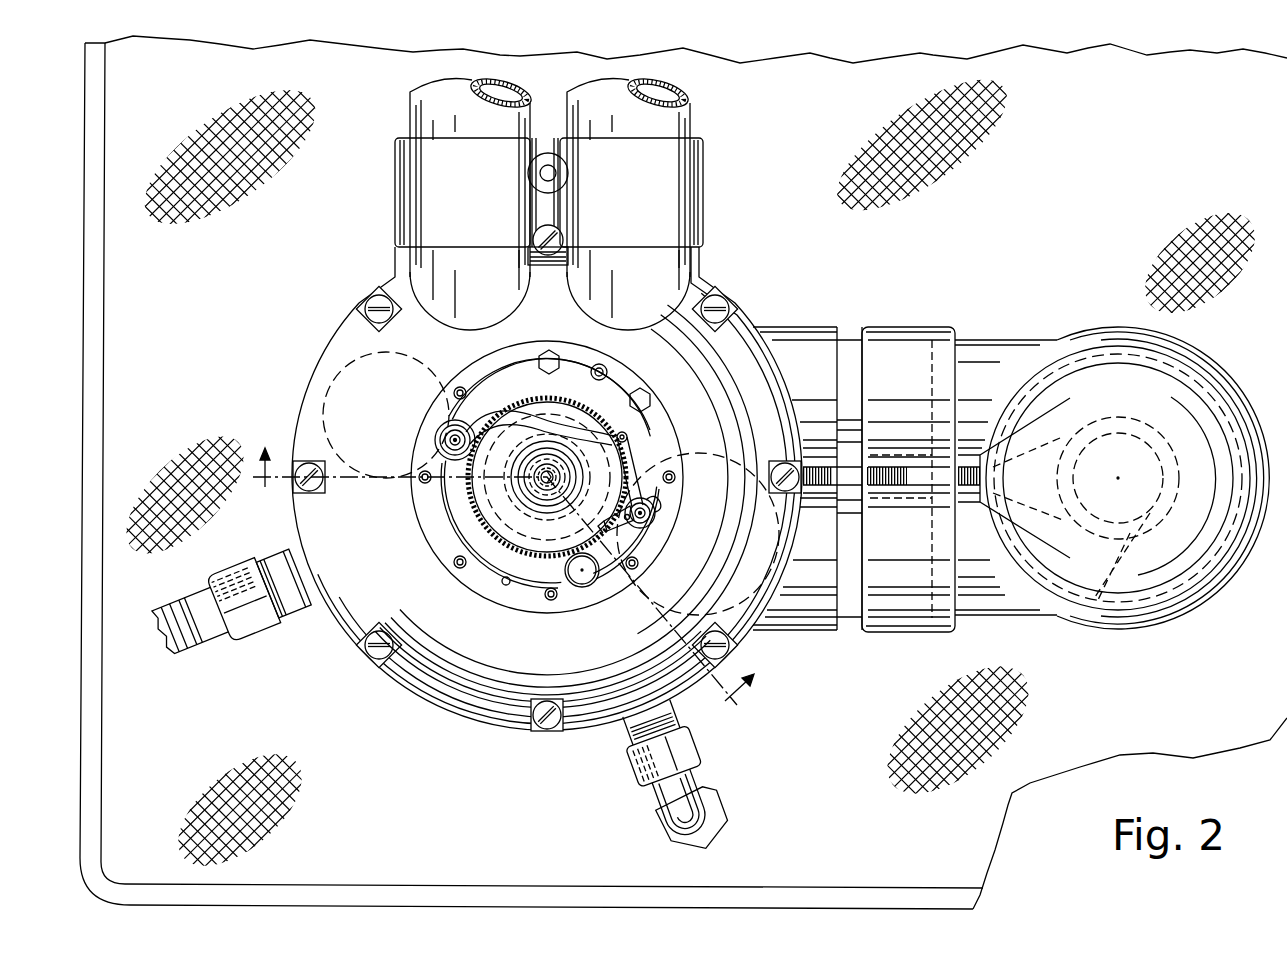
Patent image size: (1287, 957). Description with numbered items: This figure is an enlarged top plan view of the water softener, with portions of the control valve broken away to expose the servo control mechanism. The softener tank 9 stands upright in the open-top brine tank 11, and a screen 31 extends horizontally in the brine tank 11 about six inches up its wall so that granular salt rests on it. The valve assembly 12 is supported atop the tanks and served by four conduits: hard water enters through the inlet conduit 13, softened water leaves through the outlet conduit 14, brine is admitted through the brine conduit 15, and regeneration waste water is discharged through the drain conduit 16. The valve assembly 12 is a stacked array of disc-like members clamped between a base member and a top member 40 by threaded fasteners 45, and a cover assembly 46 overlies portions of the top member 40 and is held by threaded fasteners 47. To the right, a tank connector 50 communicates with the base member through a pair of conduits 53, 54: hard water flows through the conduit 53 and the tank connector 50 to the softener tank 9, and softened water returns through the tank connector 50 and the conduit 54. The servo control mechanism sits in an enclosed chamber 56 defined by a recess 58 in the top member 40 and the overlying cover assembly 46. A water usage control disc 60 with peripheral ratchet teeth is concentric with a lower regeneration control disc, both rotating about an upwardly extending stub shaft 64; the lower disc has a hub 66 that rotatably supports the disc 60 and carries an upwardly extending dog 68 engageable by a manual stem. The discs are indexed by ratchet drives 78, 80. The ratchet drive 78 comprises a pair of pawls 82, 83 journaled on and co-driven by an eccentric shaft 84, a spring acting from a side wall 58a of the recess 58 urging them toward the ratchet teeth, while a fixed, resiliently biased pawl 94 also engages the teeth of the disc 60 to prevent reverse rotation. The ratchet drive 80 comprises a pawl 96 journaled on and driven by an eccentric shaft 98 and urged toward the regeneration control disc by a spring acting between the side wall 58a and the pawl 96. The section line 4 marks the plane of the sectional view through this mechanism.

The section line 4- 4 is at (503, 588).
The softener tank 9 is at (1098, 630).
The brine tank 11 is at (444, 813).
The valve assembly 12 is at (770, 296).
The inlet conduit 13 is at (411, 175).
The outlet conduit 14 is at (700, 175).
The brine conduit 15 is at (705, 779).
The drain conduit 16 is at (300, 610).
The screen 31 is at (205, 232).
The top member 40 is at (446, 668).
The threaded fasteners 45 is at (546, 729).
The cover assembly 46 is at (428, 524).
The threaded fasteners 47 is at (550, 349).
The tank connector 50 is at (1213, 372).
The conduit 53 is at (850, 327).
The conduit 54 is at (850, 632).
The enclosed chamber 56 is at (565, 581).
The recess 58 is at (512, 582).
The side wall 58a is at (497, 563).
The water usage control disc 60 is at (547, 477).
The stub shaft 64 is at (553, 472).
The hub 66 is at (508, 478).
The bearing 68 is at (577, 487).
The ratchet drive 78 is at (658, 504).
The ratchet drive 80 is at (434, 452).
The pawl 82 is at (655, 522).
The pawl 83 is at (640, 546).
The excentric shaft 84 is at (660, 516).
The fixed resiliently biased pawl 94 is at (636, 468).
The pawl 96 is at (471, 426).
The excentric shaft 98 is at (444, 436).